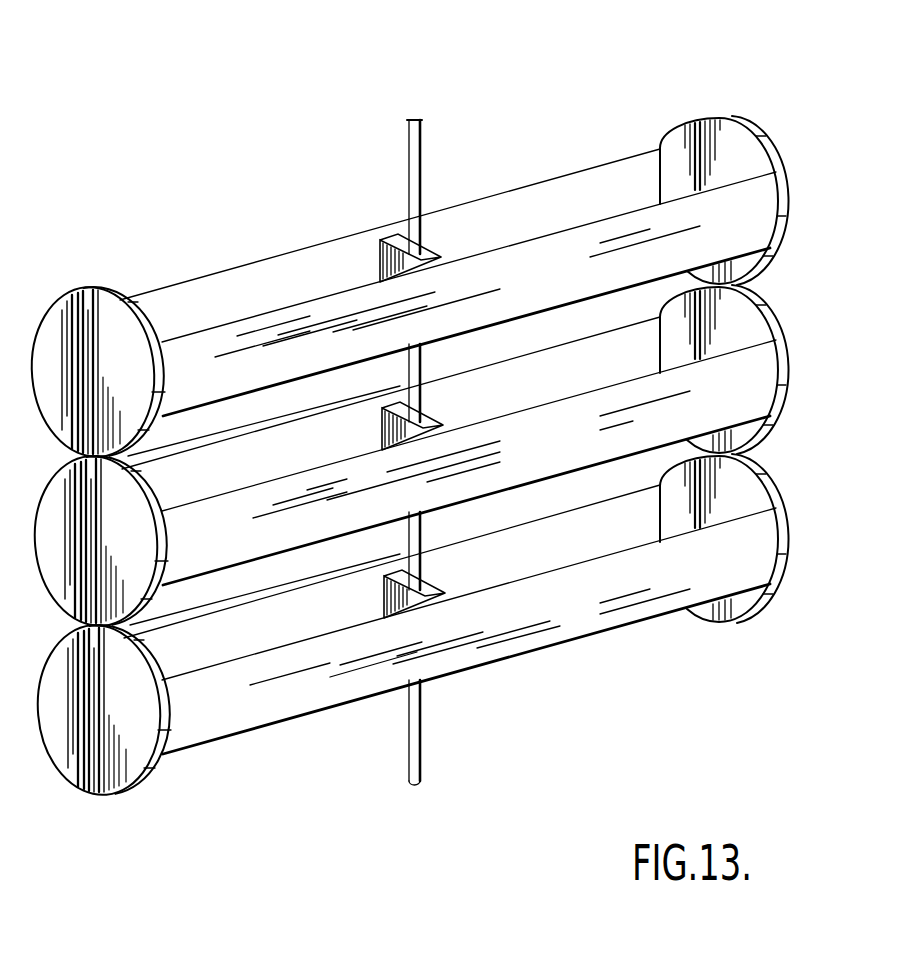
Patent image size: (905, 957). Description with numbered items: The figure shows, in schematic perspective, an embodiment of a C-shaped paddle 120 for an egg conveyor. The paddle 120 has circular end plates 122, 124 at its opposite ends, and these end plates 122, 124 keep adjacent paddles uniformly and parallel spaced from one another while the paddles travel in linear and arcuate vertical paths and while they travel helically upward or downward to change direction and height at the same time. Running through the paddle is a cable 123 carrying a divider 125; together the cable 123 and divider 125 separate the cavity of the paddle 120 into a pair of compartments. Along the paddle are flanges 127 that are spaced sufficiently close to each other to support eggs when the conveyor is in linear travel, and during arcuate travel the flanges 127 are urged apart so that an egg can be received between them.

The C-shaped paddle 120 is at (407, 456).
The circular end plate 122 is at (128, 768).
The cable 123 is at (427, 752).
The circular end plate 124 is at (729, 610).
The divider 125 is at (436, 585).
The flange 127 is at (263, 543).